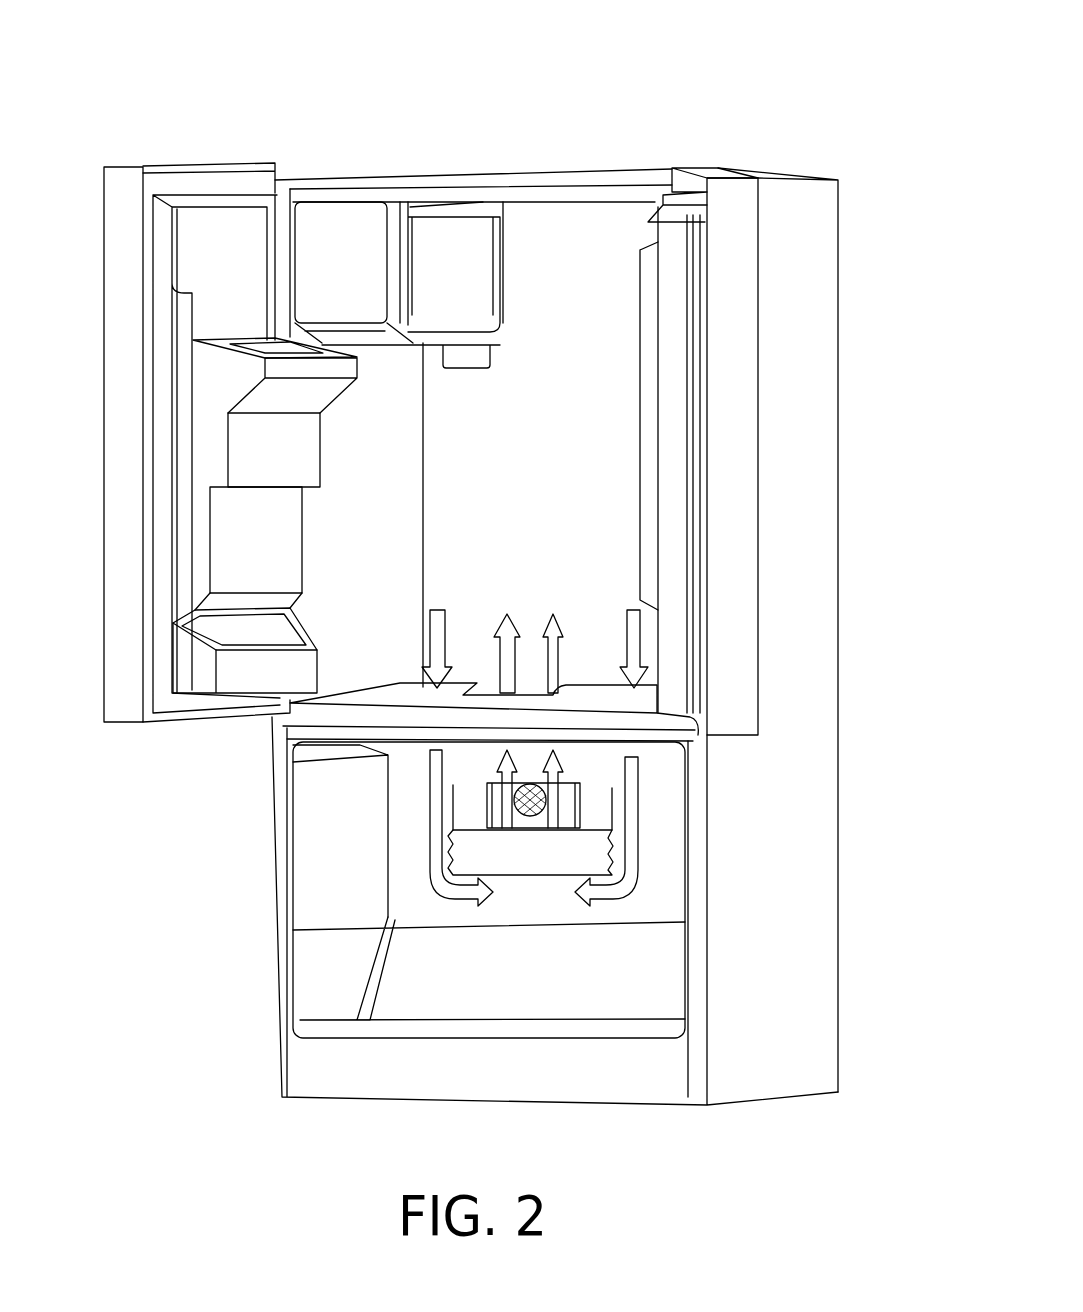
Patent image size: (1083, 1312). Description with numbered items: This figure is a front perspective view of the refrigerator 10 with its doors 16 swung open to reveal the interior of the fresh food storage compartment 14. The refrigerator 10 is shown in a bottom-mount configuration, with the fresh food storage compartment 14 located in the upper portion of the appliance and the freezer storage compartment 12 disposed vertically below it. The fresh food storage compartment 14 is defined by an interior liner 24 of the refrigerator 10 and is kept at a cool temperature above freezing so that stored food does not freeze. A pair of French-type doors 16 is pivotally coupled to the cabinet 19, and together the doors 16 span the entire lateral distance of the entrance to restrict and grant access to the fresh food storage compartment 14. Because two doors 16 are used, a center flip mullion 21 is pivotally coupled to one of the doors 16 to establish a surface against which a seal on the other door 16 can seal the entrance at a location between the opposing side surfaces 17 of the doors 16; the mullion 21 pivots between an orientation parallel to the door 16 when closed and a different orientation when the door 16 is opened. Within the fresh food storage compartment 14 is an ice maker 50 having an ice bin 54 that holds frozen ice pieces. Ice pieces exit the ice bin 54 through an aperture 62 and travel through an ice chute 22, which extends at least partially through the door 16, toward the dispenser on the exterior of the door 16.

The refrigerator 10 is at (790, 108).
The freezer storage compartment 12 is at (516, 985).
The fresh food storage compartment 14 is at (540, 437).
The doors 16 is at (104, 283).
The opposing side surfaces 17 is at (118, 349).
The cabinet 19 is at (828, 330).
The center flip mullion 21 is at (640, 502).
The ice chute 22 is at (263, 351).
The interior liner 24 is at (600, 222).
The ice maker 50 is at (455, 297).
The ice bin 54 is at (363, 306).
The aperture 62 is at (367, 349).